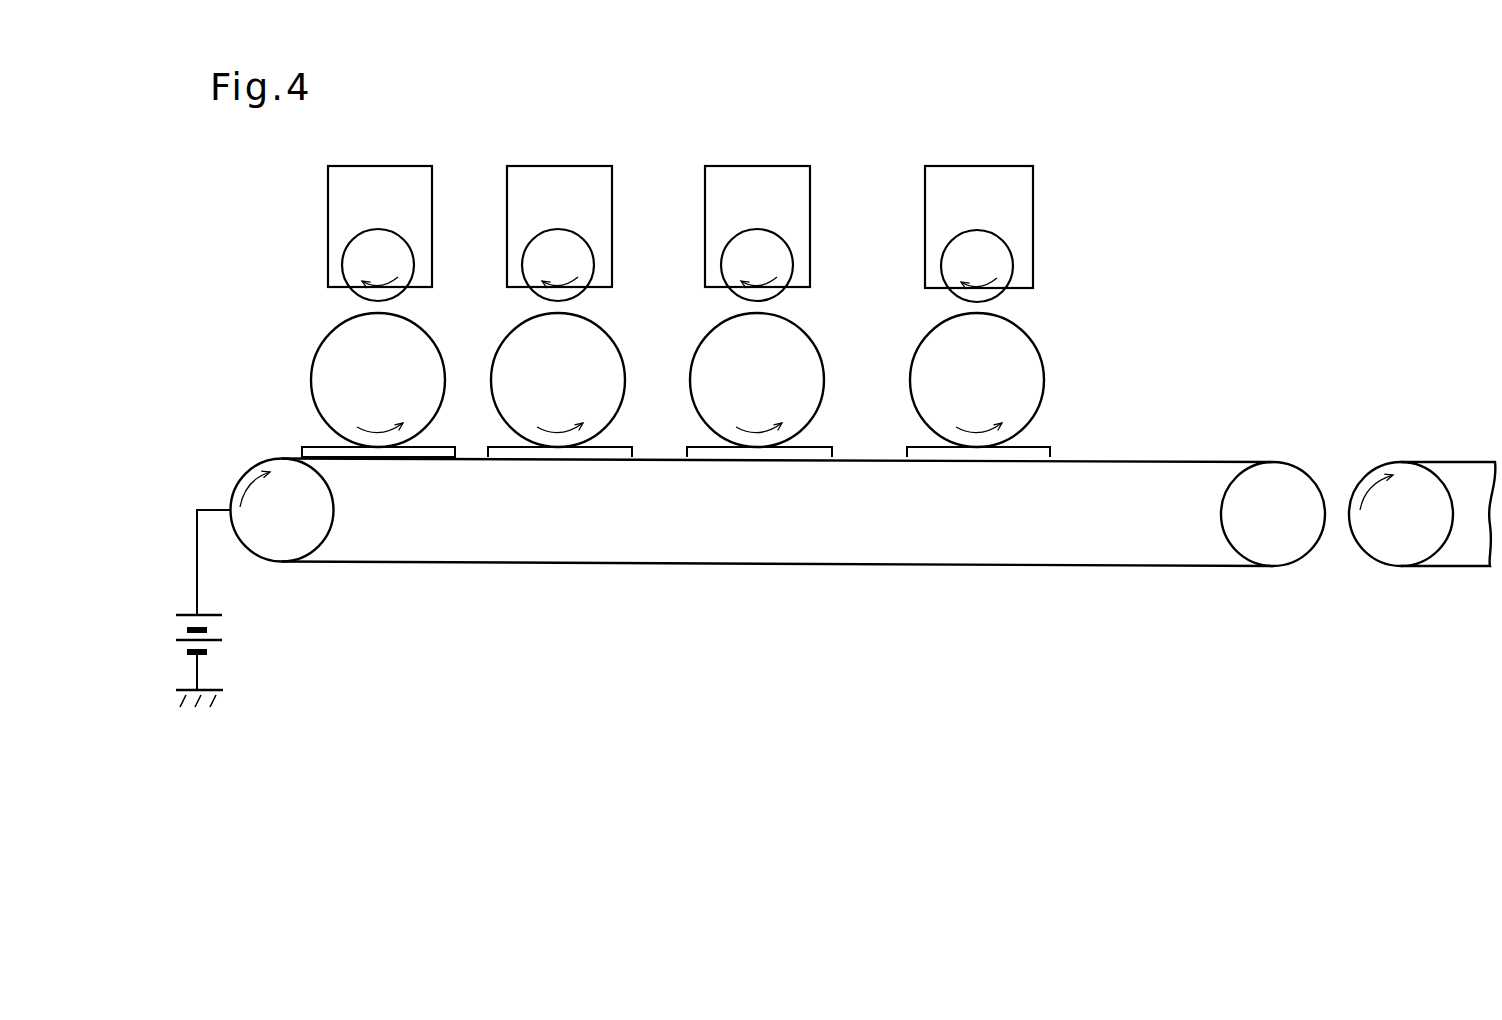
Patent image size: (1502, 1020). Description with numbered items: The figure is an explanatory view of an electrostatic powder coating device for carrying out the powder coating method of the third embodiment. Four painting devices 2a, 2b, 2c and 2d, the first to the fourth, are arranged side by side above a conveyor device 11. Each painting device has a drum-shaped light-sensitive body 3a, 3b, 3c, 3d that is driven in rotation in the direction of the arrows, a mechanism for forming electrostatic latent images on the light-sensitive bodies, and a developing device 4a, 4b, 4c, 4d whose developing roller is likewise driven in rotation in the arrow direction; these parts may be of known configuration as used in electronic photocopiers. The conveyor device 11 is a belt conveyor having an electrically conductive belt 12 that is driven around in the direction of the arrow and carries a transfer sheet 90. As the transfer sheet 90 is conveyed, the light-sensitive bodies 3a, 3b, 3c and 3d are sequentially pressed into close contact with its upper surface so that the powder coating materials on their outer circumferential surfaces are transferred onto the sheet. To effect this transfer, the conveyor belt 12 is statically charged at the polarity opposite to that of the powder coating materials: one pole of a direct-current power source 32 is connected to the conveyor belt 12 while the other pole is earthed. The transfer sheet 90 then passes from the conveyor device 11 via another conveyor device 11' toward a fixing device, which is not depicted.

The first painting device 2a is at (355, 306).
The second painting device 2b is at (536, 306).
The third painting device 2c is at (736, 306).
The fourth painting device 2d is at (948, 306).
The drum-shaped light-sensitive body 3a is at (339, 357).
The drum-shaped light-sensitive body 3b is at (521, 357).
The drum-shaped light-sensitive body 3c is at (722, 357).
The drum-shaped light-sensitive body 3d is at (931, 357).
The developing device 4a is at (347, 192).
The developing device 4b is at (529, 192).
The developing device 4c is at (730, 192).
The developing device 4d is at (937, 192).
The transfer sheet 90 is at (311, 447).
The conveyor device 11 is at (778, 551).
The another conveyor device 11' is at (1422, 552).
The electrically conductive belt 12 is at (443, 566).
The direct-current power source 32 is at (222, 640).